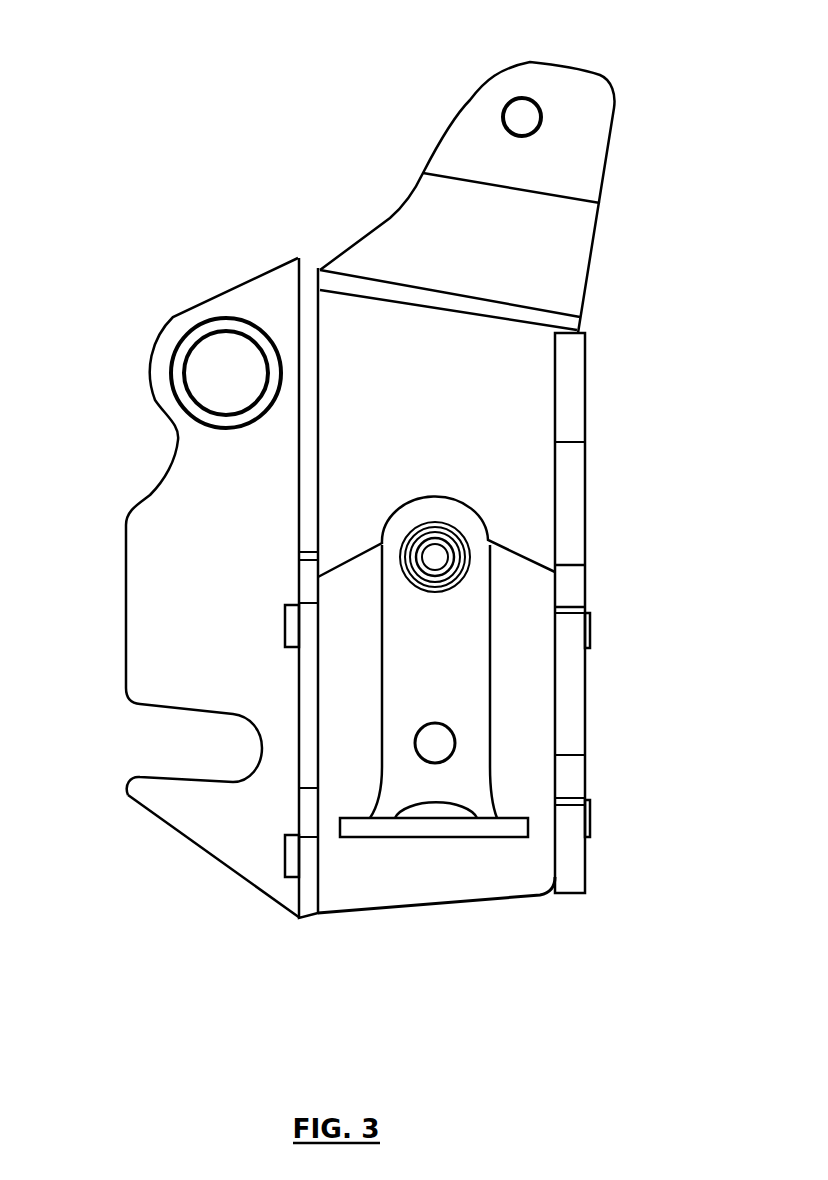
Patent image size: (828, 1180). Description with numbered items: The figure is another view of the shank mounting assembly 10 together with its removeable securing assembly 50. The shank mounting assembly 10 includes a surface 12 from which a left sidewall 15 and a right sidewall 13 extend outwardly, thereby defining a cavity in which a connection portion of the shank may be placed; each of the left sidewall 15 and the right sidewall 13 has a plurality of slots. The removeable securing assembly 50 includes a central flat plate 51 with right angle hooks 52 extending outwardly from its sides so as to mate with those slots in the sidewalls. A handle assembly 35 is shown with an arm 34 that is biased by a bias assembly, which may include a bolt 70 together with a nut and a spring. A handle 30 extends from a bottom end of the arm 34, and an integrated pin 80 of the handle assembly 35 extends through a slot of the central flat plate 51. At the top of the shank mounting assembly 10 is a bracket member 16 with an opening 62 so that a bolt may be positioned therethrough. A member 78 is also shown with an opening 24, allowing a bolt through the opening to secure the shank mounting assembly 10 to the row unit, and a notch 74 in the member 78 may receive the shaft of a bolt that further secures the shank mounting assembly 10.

The shank mounting assembly 10 is at (337, 154).
The surface 12 is at (523, 403).
The right sidewall 13 is at (570, 515).
The left sidewall 15 is at (313, 273).
The bracket member 16 is at (610, 163).
The opening 24 is at (232, 400).
The handle 30 is at (373, 835).
The arm 34 is at (477, 668).
The handle assembly 35 is at (463, 841).
The removeable securing assembly 50 is at (364, 543).
The central flat plate 51 is at (542, 602).
The right angle hooks 52 is at (287, 627).
The opening 62 is at (532, 115).
The bolt 70 is at (433, 558).
The notch 74 is at (162, 752).
The member 78 is at (138, 543).
The integrated pin 80 is at (443, 747).